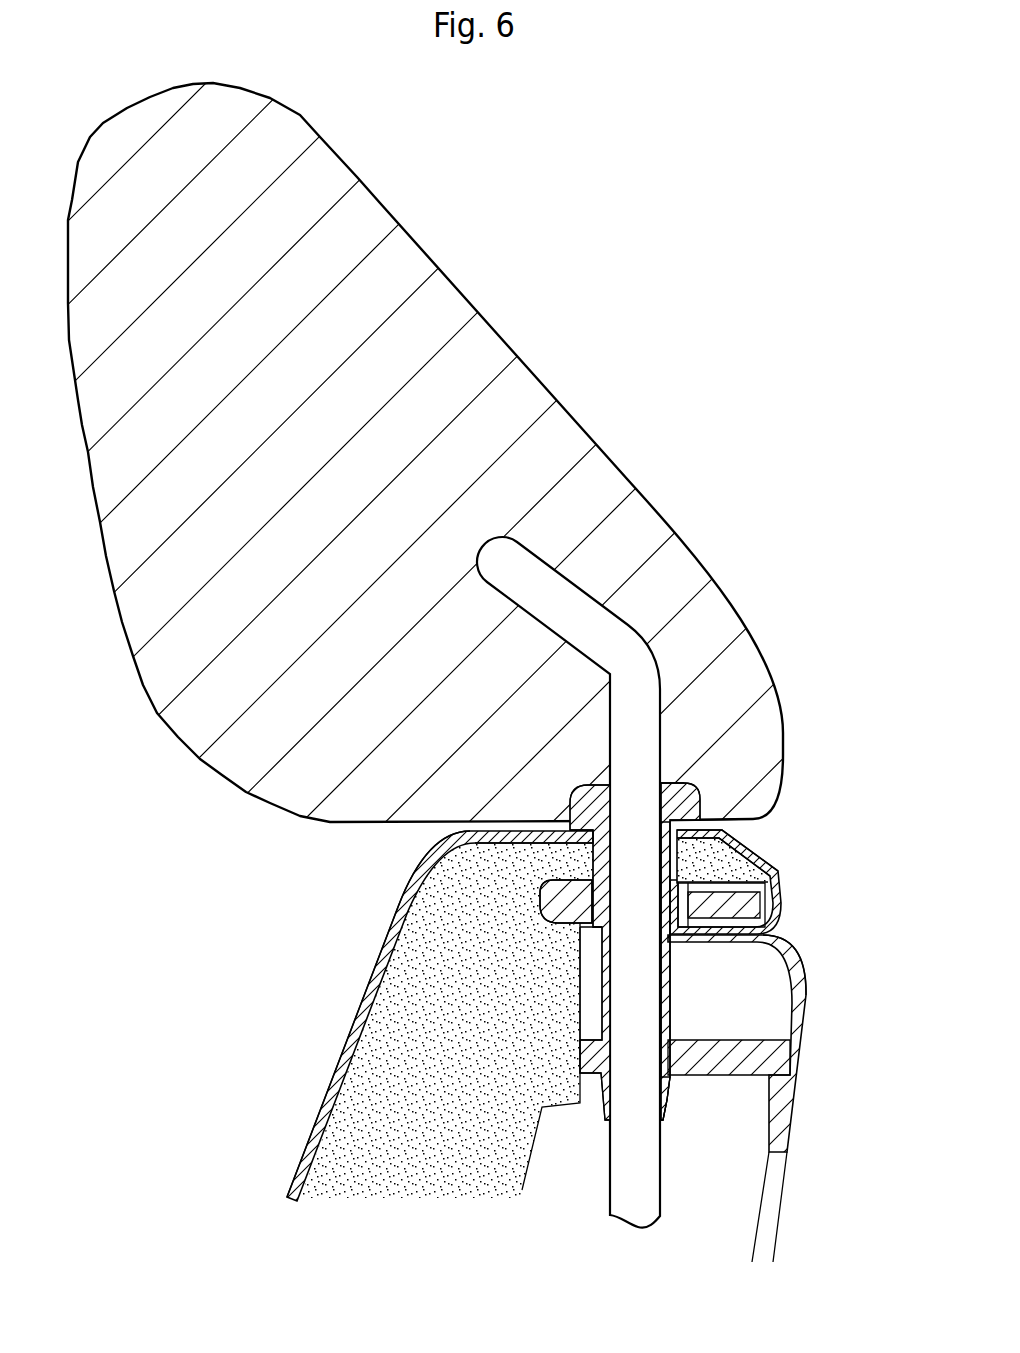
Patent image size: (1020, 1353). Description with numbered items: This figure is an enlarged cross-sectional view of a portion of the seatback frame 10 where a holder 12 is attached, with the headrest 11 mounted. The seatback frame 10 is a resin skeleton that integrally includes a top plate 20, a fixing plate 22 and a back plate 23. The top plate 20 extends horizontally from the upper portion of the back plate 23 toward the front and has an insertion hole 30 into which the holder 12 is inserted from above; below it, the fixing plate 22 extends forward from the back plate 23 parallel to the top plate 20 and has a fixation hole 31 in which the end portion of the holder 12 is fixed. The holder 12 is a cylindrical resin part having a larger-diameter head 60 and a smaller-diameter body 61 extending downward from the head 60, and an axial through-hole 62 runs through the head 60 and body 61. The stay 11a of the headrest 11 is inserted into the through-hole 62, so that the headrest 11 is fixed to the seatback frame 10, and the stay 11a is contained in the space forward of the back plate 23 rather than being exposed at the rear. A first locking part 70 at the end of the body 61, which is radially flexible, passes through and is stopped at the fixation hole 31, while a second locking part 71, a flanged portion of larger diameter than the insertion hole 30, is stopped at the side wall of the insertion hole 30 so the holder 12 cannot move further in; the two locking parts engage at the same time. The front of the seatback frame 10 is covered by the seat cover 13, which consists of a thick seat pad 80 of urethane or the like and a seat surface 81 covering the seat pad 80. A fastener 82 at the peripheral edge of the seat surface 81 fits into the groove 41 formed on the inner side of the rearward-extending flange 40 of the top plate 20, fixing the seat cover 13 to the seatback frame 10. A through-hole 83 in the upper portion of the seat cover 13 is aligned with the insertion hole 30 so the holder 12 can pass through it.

The seatback frame 10 is at (808, 983).
The headrest 11 is at (468, 305).
The stay 11a is at (662, 1193).
The holder 12 is at (695, 787).
The seat cover 13 is at (366, 994).
The top plate 20 is at (557, 907).
The fixing plate 22 is at (713, 1038).
The back plate 23 is at (790, 1117).
The insertion hole 30 is at (590, 871).
The fixation hole 31 is at (668, 1036).
The flange 40 is at (740, 876).
The groove 41 is at (750, 897).
The head 60 is at (700, 793).
The body 61 is at (666, 983).
The through-hole 62 is at (695, 773).
The first locking part 70 is at (668, 1103).
The second locking part 71 is at (748, 858).
The seat pad 80 is at (362, 1112).
The seat surface 81 is at (347, 1060).
The fastener 82 is at (748, 913).
The through-hole 83 is at (733, 840).